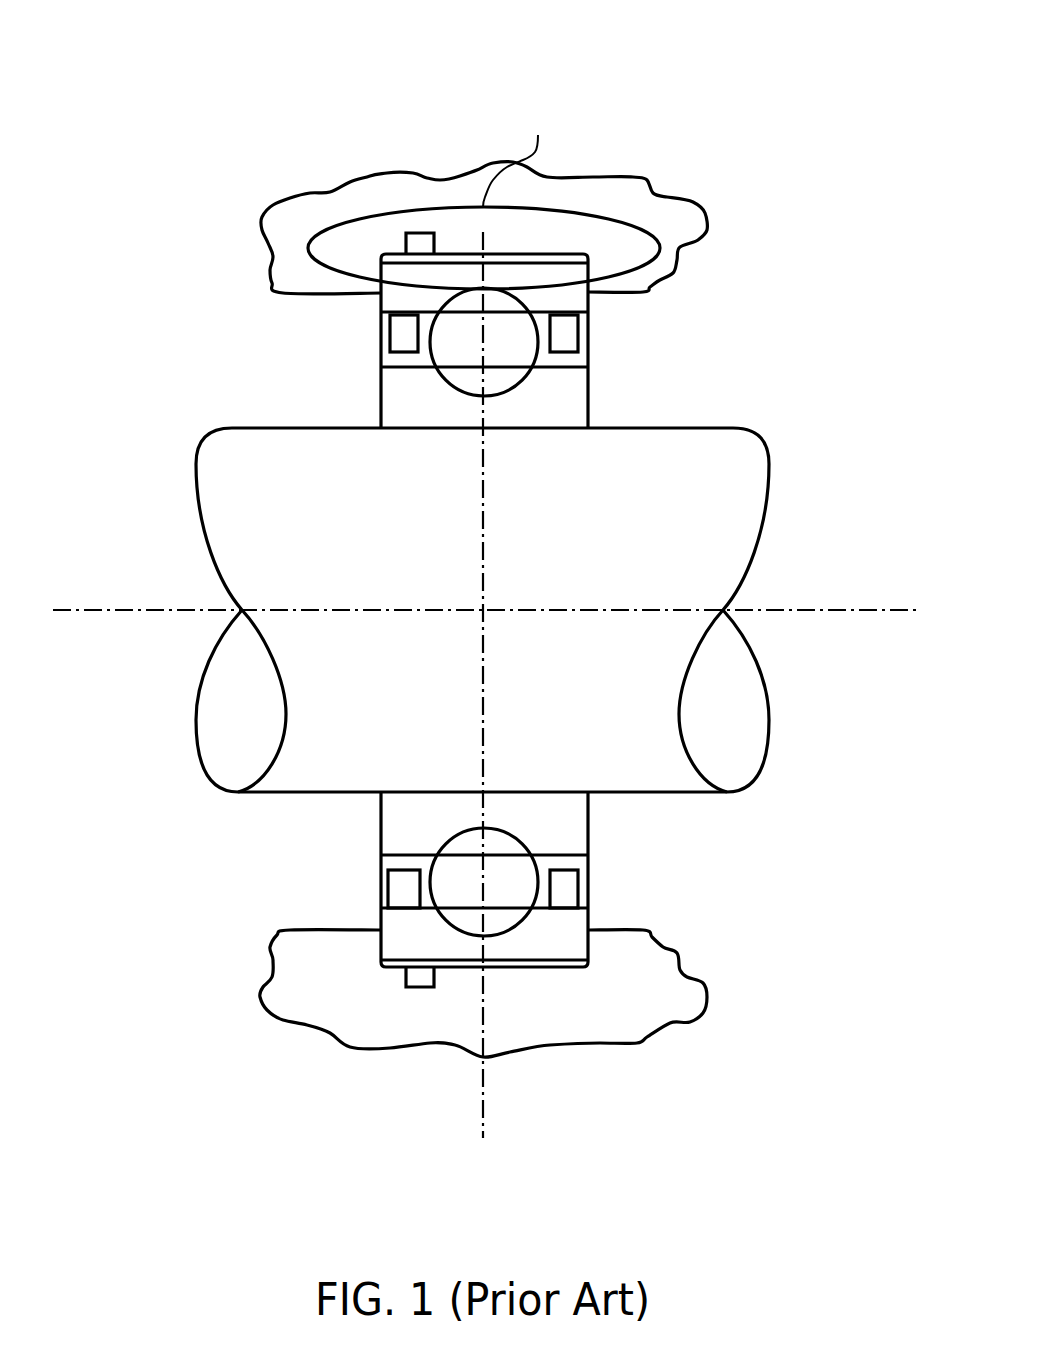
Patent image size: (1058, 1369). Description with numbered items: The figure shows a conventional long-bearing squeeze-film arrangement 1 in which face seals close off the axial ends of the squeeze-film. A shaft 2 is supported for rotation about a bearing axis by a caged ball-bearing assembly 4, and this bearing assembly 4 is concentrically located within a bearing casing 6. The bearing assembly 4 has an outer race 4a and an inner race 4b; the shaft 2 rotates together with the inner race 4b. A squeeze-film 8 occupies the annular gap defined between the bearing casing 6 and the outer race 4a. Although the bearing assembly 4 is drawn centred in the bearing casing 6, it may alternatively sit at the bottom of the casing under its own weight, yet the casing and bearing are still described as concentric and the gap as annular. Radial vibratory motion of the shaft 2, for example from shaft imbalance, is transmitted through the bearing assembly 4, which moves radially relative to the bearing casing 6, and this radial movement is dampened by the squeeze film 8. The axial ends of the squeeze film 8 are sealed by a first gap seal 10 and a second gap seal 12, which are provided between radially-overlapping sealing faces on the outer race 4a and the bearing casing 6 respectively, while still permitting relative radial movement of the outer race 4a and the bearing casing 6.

The squeeze-film arrangement 1 is at (163, 161).
The shaft 2 is at (483, 610).
The caged ball-bearing assembly 4 is at (563, 332).
The outer race 4a is at (560, 920).
The inner race 4b is at (563, 403).
The bearing casing 6 is at (625, 200).
The squeeze-film 8 is at (455, 250).
The first gap seal 10 is at (380, 933).
The second gap seal 12 is at (588, 940).